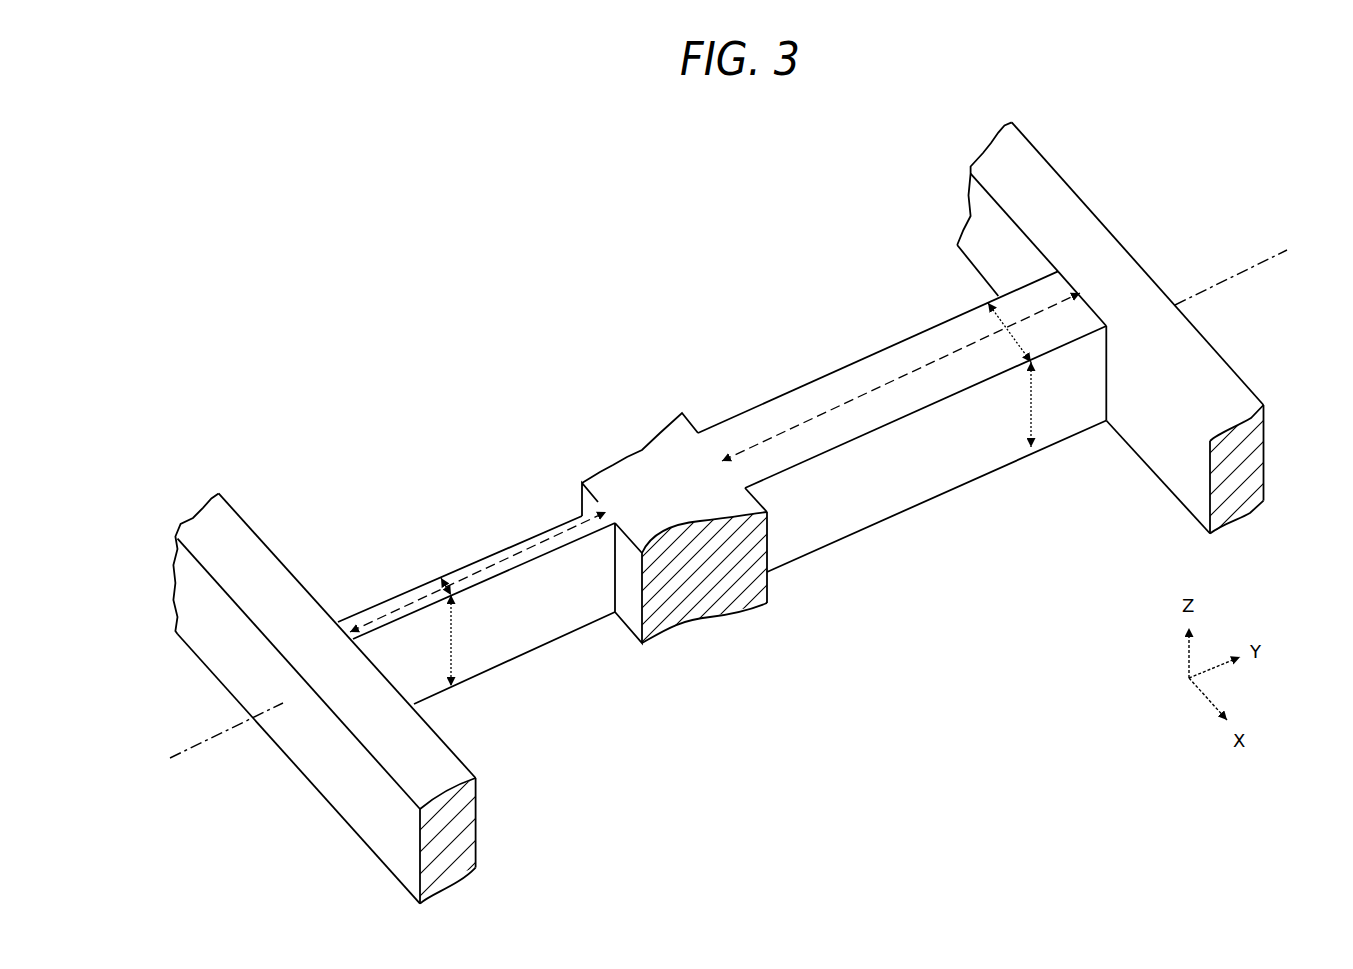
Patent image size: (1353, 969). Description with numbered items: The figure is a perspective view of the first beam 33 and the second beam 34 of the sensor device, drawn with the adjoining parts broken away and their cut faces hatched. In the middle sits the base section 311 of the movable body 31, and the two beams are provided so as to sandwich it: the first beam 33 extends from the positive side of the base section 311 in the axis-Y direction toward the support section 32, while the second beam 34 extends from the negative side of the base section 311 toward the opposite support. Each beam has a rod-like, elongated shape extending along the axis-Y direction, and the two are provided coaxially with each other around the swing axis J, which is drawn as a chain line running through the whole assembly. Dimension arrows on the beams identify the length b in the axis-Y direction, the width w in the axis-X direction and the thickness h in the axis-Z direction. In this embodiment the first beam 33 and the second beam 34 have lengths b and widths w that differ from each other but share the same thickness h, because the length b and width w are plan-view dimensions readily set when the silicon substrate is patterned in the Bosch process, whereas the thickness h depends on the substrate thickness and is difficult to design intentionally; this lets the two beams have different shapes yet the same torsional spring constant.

The movable body 31 is at (699, 510).
The base section 311 is at (645, 470).
The support section 32 is at (1040, 200).
The first beam 33 is at (863, 378).
The second beam 34 is at (517, 540).
The length b is at (404, 600).
The width w is at (446, 576).
The thickness h is at (453, 684).
The swing axis J is at (734, 497).